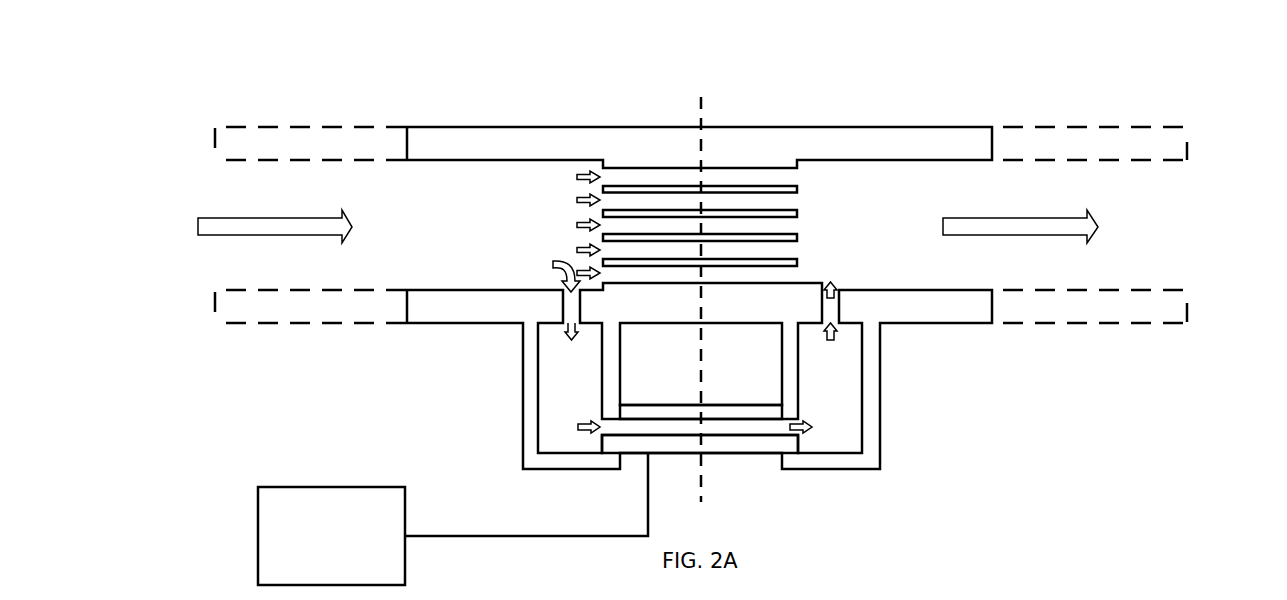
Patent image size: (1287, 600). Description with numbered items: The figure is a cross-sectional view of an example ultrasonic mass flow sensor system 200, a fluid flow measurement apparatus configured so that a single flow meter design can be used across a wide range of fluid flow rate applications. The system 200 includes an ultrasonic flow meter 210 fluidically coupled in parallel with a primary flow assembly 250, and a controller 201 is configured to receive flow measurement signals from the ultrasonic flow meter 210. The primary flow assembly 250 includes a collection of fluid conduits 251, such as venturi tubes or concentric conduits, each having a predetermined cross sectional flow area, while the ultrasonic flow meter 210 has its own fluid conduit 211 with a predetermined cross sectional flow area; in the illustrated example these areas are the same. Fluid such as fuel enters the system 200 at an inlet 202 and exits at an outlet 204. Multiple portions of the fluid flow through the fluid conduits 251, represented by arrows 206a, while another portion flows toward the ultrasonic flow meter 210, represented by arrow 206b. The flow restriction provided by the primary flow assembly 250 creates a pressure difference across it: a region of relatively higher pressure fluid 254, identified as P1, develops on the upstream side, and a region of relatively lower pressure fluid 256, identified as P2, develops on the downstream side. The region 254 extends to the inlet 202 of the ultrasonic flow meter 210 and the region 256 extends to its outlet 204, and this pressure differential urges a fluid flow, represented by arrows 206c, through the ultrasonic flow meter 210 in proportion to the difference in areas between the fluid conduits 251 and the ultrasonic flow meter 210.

The ultrasonic mass flow sensor system 200 is at (211, 45).
The controller 201 is at (352, 563).
The inlet 202 is at (247, 193).
The outlet 204 is at (1169, 193).
The arrows 206a is at (577, 200).
The arrow 206b is at (552, 265).
The arrows 206c is at (582, 441).
The ultrasonic flow meter 210 is at (638, 456).
The fluid conduit 211 is at (748, 442).
The primary flow assembly 250 is at (798, 122).
The fluid conduits 251 is at (798, 171).
The region of relatively higher pressure fluid 254 is at (452, 203).
The region of relatively lower pressure fluid 256 is at (932, 241).